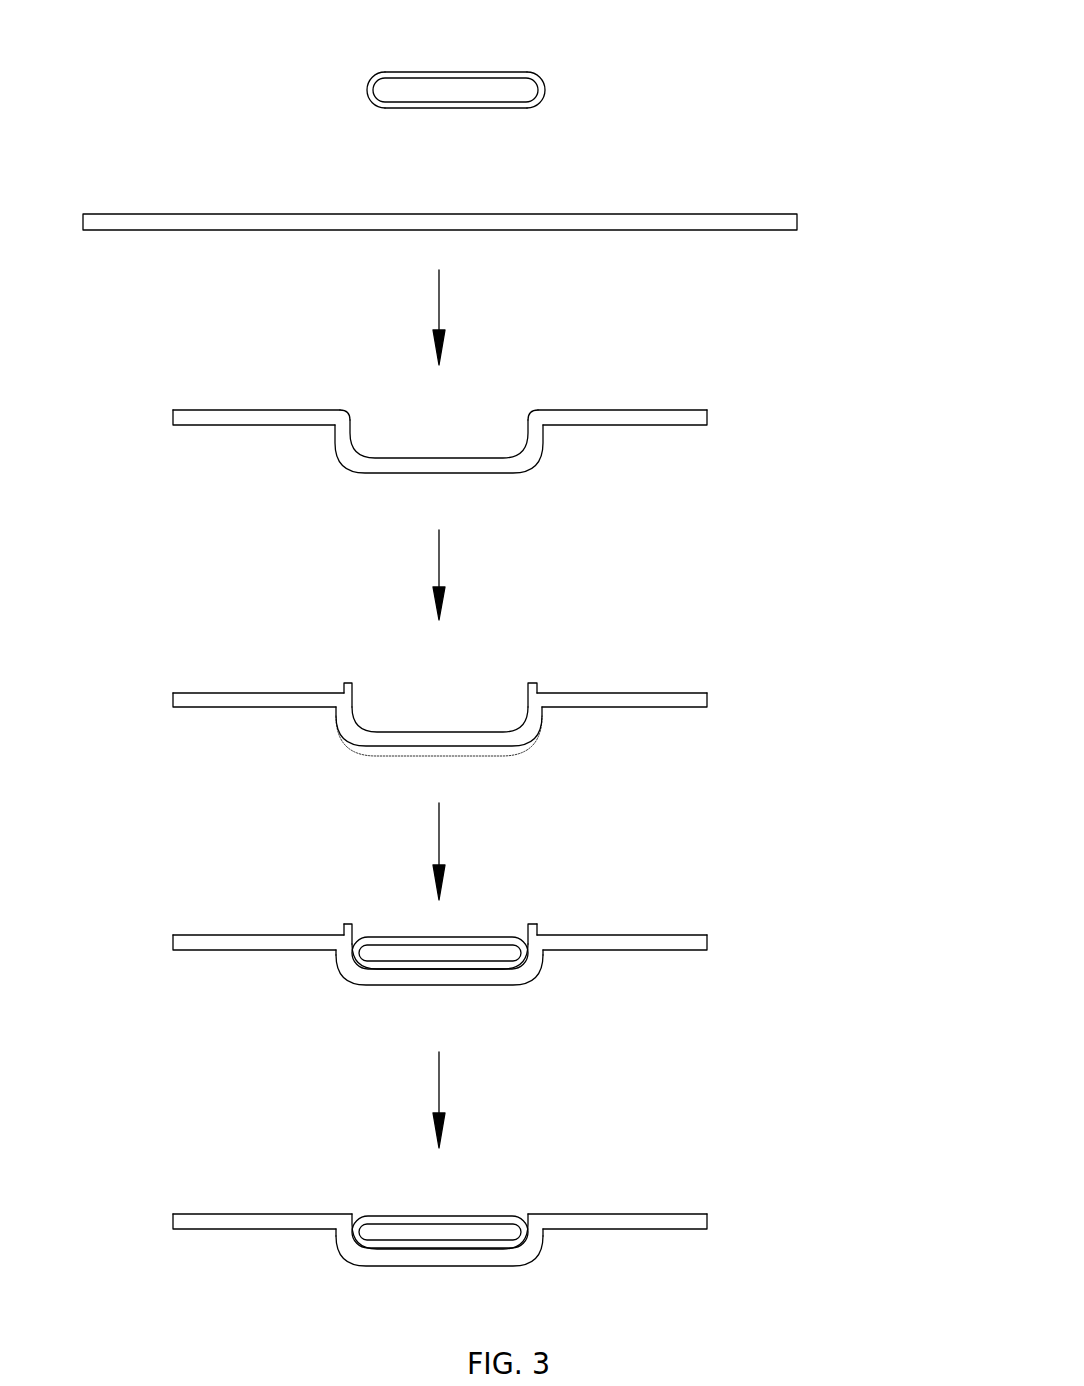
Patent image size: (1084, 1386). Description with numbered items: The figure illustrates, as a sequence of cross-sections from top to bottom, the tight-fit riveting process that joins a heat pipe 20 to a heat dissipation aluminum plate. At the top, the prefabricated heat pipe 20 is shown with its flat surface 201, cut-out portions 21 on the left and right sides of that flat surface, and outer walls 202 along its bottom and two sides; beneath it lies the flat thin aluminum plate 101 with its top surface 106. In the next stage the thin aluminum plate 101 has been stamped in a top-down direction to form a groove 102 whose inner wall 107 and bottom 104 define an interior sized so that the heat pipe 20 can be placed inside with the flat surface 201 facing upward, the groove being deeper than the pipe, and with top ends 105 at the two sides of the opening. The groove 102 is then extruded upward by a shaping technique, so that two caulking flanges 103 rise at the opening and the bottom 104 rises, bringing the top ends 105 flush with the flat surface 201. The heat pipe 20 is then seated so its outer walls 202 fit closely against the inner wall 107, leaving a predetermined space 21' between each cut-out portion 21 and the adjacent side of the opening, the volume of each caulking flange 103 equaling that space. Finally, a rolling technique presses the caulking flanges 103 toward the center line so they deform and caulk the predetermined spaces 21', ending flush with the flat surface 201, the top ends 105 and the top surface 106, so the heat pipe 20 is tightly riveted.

The heat pipe 20 is at (548, 85).
The cut-out portion 21 is at (466, 55).
The predetermined space 21' is at (440, 897).
The flat surface 201 is at (450, 72).
The outer walls 202 is at (540, 95).
The thin aluminum plate 101 is at (801, 222).
The groove 102 is at (492, 437).
The caulking flange 103 is at (344, 683).
The bottom of the groove 104 is at (480, 473).
The top ends 105 is at (338, 412).
The top surface 106 is at (651, 214).
The inner wall 107 is at (457, 457).